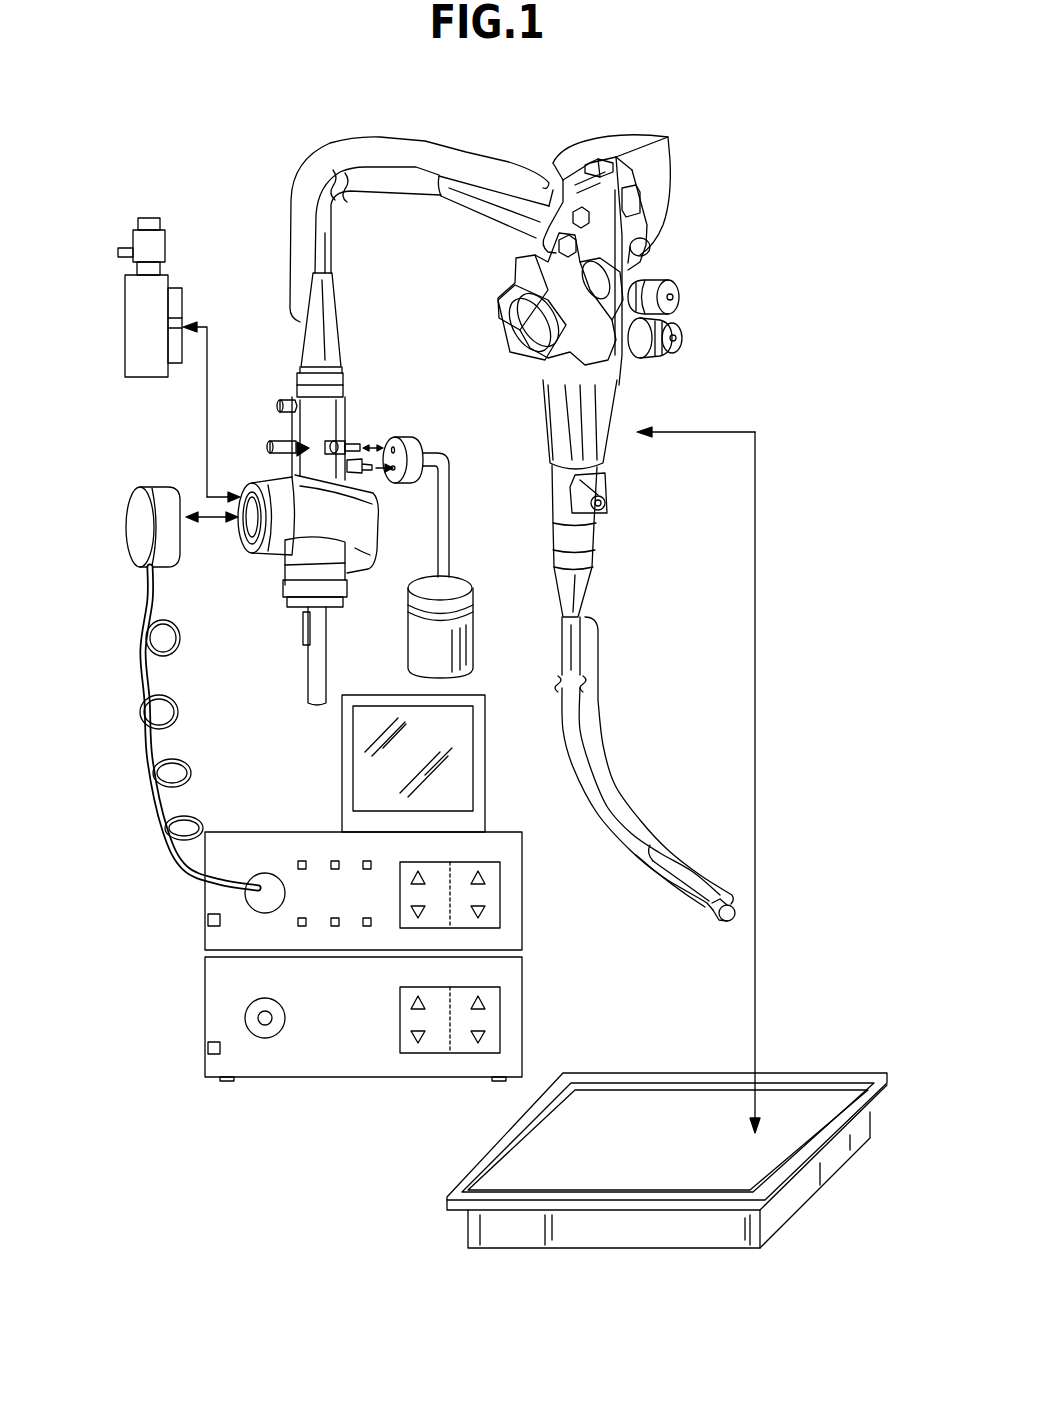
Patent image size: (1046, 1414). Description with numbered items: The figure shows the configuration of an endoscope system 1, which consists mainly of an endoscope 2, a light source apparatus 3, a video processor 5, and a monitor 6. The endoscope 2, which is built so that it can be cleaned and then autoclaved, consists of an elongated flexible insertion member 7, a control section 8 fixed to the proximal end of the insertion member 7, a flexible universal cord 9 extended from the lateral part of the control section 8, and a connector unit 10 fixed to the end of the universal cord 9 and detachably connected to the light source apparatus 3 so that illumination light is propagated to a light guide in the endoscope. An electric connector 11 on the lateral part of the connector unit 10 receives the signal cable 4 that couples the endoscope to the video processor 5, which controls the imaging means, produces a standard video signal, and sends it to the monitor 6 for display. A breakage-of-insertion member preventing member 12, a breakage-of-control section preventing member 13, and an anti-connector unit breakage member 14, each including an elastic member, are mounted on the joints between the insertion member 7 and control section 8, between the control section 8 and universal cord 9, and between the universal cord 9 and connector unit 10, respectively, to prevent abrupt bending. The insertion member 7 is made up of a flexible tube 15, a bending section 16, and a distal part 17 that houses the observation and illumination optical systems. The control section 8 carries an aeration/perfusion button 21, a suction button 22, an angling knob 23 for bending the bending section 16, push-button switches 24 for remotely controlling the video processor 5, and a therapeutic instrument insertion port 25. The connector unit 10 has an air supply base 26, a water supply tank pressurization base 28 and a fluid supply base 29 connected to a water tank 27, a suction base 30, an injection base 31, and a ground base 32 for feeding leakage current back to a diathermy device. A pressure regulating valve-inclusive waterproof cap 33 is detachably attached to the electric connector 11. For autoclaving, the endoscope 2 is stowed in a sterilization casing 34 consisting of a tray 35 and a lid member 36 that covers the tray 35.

The endoscope system 1 is at (649, 271).
The endoscope 2 is at (648, 380).
The light source apparatus 3 is at (205, 1019).
The signal cable 4 is at (157, 488).
The video processor 5 is at (205, 916).
The monitor 6 is at (485, 786).
The insertion member 7 is at (633, 807).
The control section 8 is at (612, 409).
The universal cord 9 is at (460, 155).
The connector unit 10 is at (345, 568).
The electric connector 11 is at (250, 559).
The breakage-of-insertion member preventing member 12 is at (596, 591).
The breakage-of-control section preventing member 13 is at (500, 213).
The anti-connector unit breakage member 14 is at (318, 349).
The flexible tube 15 is at (605, 830).
The bending section 16 is at (673, 894).
The distal part 17 is at (722, 927).
The aeration/perfusion button 21 is at (683, 339).
The suction button 22 is at (680, 298).
The angling knob 23 is at (500, 304).
The push-button switches 24 is at (669, 139).
The therapeutic instrument insertion port 25 is at (607, 504).
The air supply base 26 is at (305, 640).
The water tank 27 is at (408, 657).
The water supply tank pressurization base 28 is at (360, 447).
The fluid supply base 29 is at (360, 474).
The suction base 30 is at (283, 445).
The injection base 31 is at (288, 405).
The ground base 32 is at (348, 444).
The pressure regulating valve-inclusive waterproof cap 33 is at (165, 284).
The sterilization casing 34 is at (667, 1142).
The tray 35 is at (800, 1202).
The lid member 36 is at (650, 1110).